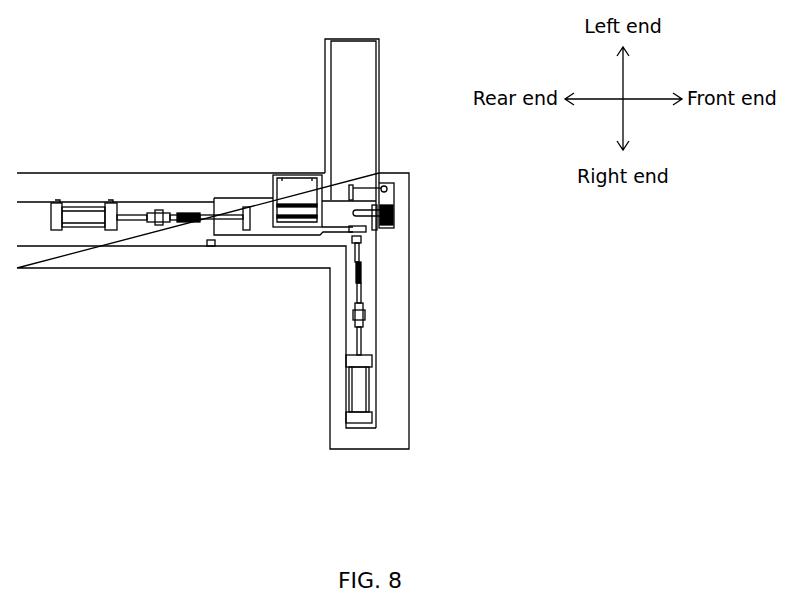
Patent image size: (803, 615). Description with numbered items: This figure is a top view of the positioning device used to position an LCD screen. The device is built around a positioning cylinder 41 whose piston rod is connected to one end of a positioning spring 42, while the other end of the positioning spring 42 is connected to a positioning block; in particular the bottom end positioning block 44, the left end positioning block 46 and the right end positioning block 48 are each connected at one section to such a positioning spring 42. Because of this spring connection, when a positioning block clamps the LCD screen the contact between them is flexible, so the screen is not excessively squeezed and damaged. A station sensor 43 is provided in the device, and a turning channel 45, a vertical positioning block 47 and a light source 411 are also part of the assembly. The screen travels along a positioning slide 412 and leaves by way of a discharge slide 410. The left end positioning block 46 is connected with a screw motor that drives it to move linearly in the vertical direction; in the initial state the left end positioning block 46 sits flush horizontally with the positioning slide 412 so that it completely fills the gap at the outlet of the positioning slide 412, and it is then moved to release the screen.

The positioning cylinder 41 is at (85, 219).
The positioning spring 42 is at (187, 222).
The station sensor 43 is at (212, 245).
The bottom end positioning block 44 is at (244, 209).
The turning channel 45 is at (295, 195).
The left end positioning block 46 is at (353, 187).
The vertical positioning block 47 is at (393, 200).
The right end positioning block 48 is at (380, 235).
The discharge slide 410 is at (350, 128).
The light source 411 is at (380, 227).
The positioning slide 412 is at (258, 212).